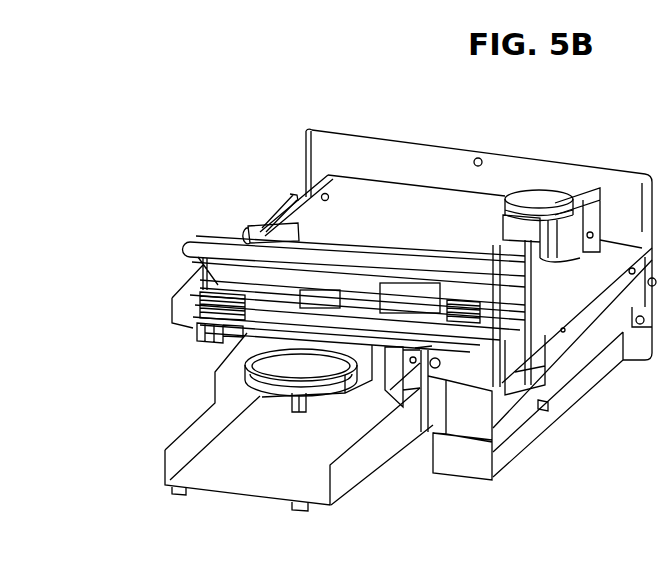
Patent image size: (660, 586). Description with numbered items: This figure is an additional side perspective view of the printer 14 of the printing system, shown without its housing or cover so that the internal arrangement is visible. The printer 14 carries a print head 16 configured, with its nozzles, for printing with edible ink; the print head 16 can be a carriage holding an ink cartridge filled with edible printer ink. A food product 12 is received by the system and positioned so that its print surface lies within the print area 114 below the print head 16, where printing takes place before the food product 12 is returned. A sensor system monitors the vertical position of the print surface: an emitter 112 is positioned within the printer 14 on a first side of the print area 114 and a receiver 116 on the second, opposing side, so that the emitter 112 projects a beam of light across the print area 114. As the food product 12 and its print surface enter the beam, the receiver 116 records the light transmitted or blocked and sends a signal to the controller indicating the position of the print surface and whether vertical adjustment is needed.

The printer 14 is at (228, 181).
The print head 16 is at (515, 389).
The food product 12 is at (232, 375).
The emitter 112 is at (414, 376).
The print area 114 is at (303, 427).
The receiver 116 is at (193, 345).